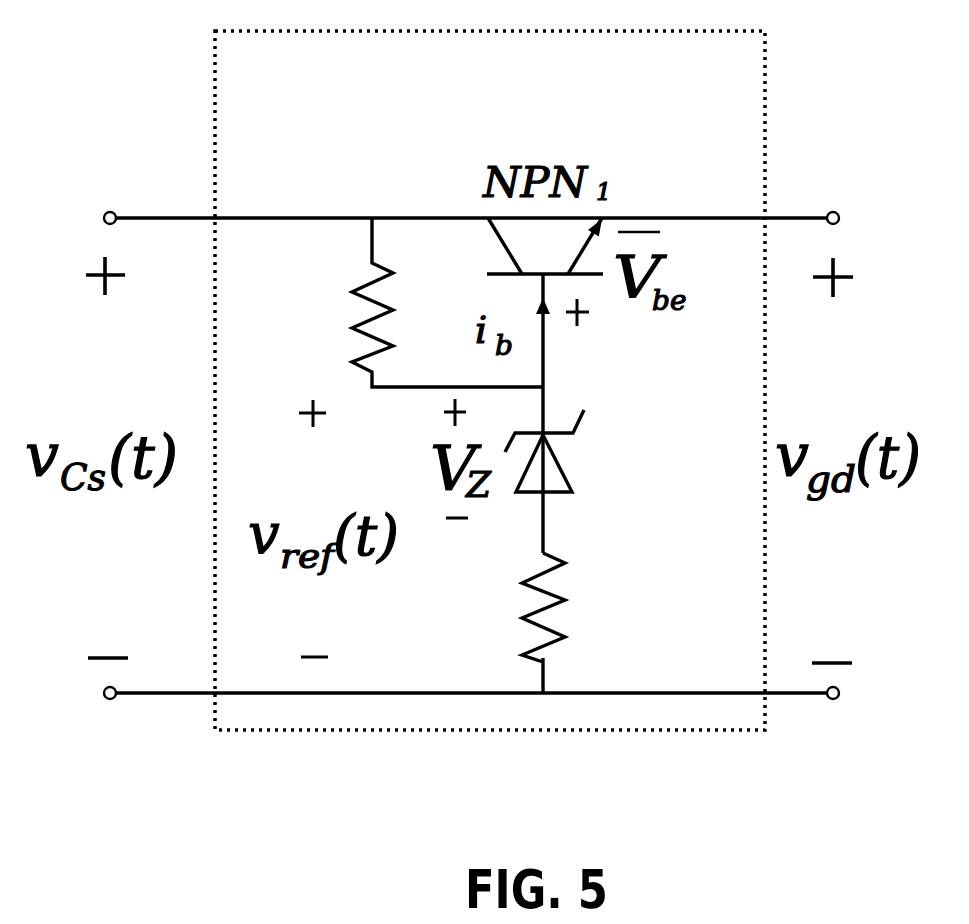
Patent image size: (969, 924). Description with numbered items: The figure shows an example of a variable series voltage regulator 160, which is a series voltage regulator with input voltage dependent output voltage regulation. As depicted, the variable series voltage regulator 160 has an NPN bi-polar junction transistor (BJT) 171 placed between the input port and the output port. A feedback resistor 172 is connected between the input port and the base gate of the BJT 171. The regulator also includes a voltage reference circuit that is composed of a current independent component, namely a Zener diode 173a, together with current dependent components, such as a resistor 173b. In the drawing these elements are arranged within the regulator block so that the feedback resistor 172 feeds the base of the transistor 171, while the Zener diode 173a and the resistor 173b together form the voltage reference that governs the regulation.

The variable series voltage regulator 160 is at (214, 70).
The NPN bi-polar junction transistor 171 is at (626, 202).
The feedback resistor 172 is at (407, 242).
The Zener diode 173a is at (552, 424).
The resistor 173b is at (655, 637).